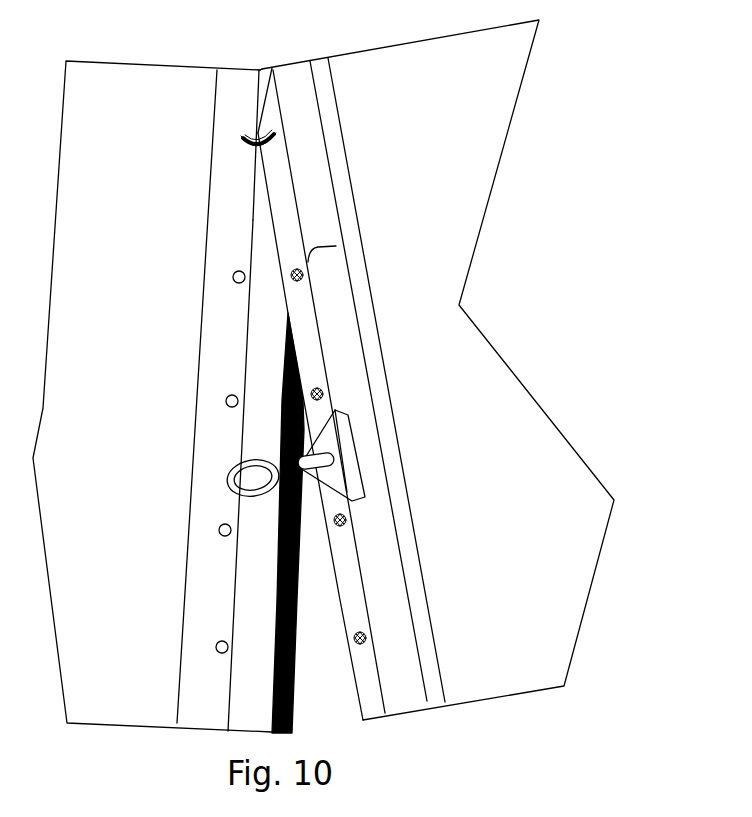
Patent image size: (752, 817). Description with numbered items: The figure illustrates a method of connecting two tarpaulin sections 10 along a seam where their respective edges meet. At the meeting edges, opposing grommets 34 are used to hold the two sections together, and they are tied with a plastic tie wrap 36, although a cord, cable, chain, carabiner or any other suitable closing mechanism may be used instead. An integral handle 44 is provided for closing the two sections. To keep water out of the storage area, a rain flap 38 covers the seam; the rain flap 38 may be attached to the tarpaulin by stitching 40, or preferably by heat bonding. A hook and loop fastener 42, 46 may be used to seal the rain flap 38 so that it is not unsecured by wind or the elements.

The tarpaulin section 10 is at (108, 263).
The grommet 34 is at (238, 133).
The plastic tie wrap 36 is at (273, 67).
The rain flap 38 is at (262, 598).
The stitching 40 is at (200, 340).
The hook and loop fastener 42 is at (297, 651).
The integral handle 44 is at (233, 463).
The hook and loop fastener 46 is at (441, 705).